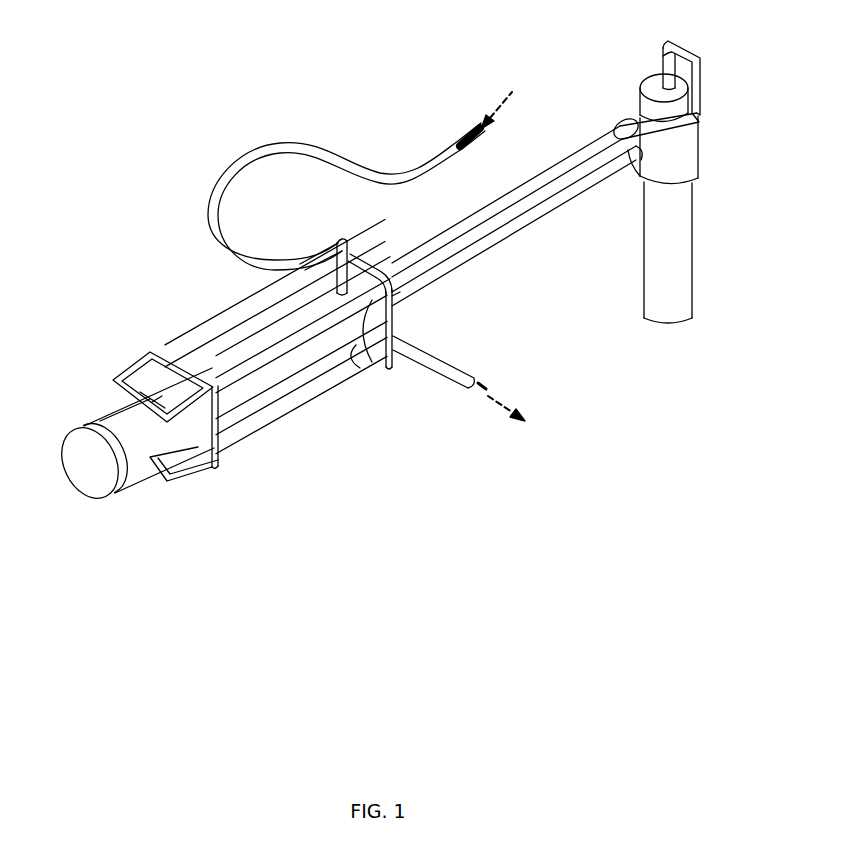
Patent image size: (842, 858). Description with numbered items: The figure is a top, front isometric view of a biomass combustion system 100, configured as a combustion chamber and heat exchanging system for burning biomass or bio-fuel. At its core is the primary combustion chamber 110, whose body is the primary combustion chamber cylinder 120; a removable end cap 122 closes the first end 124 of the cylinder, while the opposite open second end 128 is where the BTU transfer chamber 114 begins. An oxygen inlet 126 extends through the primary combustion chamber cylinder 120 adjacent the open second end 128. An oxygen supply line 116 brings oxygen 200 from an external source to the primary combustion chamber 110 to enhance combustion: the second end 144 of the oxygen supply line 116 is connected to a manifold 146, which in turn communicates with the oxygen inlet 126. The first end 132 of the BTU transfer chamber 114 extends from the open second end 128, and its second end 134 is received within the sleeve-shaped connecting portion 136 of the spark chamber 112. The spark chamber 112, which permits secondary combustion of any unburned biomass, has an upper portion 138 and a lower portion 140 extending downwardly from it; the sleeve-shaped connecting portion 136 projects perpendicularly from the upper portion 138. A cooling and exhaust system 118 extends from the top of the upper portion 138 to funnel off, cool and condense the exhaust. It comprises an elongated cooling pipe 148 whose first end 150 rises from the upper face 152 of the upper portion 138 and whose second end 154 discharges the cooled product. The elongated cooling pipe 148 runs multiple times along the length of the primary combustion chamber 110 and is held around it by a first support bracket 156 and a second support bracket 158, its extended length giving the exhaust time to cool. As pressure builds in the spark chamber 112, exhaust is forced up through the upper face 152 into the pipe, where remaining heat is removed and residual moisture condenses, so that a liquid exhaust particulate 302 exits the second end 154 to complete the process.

The biomass combustion system 100 is at (133, 178).
The primary combustion chamber 110 is at (258, 421).
The spark chamber 112 is at (690, 200).
The BTU transfer chamber 114 is at (507, 198).
The oxygen supply line 116 is at (286, 150).
The cooling and exhaust system 118 is at (705, 95).
The primary combustion chamber cylinder 120 is at (130, 458).
The removable end cap 122 is at (78, 426).
The first end 124 is at (108, 420).
The oxygen inlet 126 is at (350, 275).
The open second end 128 is at (363, 362).
The first end 132 is at (403, 292).
The second end 134 is at (615, 176).
The sleeve-shaped connecting portion 136 is at (626, 122).
The upper portion 138 is at (690, 150).
The lower portion 140 is at (692, 276).
The second end 144 is at (292, 260).
The manifold 146 is at (336, 240).
The elongated cooling pipe 148 is at (477, 250).
The first end 150 is at (663, 52).
The upper face 152 is at (648, 82).
The second end 154 is at (455, 372).
The first support bracket 156 is at (150, 350).
The second support bracket 158 is at (348, 372).
The oxygen 200 is at (489, 116).
The liquid exhaust particulate 302 is at (495, 395).